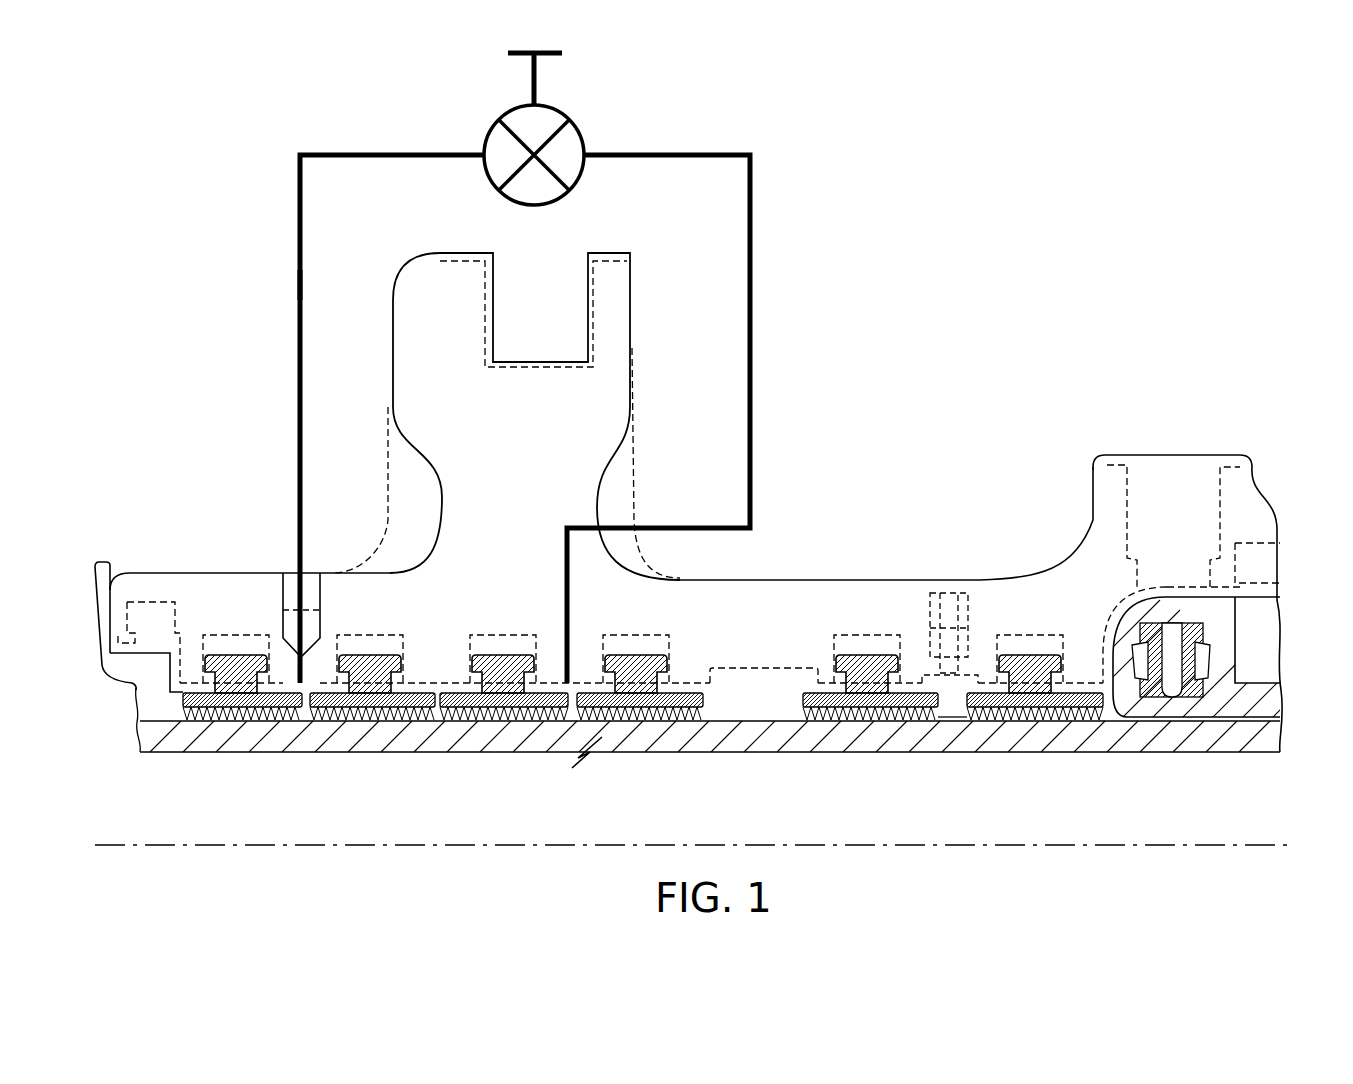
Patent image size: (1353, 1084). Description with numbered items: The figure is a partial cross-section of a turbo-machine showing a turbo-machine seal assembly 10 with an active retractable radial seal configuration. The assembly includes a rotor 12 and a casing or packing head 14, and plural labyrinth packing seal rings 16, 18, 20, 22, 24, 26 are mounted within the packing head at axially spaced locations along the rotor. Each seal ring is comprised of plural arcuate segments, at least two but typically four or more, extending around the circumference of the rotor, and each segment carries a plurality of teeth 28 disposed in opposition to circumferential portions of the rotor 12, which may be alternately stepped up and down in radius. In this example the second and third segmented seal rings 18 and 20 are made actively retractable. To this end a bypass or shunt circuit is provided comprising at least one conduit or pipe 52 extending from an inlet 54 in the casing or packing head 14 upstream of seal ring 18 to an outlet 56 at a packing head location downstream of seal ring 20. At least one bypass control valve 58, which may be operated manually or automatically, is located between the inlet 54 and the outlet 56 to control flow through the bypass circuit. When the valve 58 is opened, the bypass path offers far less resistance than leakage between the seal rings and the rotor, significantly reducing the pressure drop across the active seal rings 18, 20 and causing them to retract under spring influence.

The turbo-machine seal assembly 10 is at (1004, 358).
The rotor 12 is at (743, 732).
The casing or packing head 14 is at (458, 532).
The labyrinth packing seal ring 16 is at (233, 677).
The labyrinth packing seal ring 18 is at (360, 668).
The labyrinth packing seal ring 20 is at (522, 670).
The labyrinth packing seal ring 22 is at (642, 667).
The labyrinth packing seal ring 24 is at (867, 683).
The labyrinth packing seal ring 26 is at (1033, 690).
The teeth 28 is at (920, 708).
The conduit or pipe 52 is at (300, 287).
The inlet 54 is at (292, 683).
The outlet 56 is at (563, 663).
The bypass control valve 58 is at (580, 133).